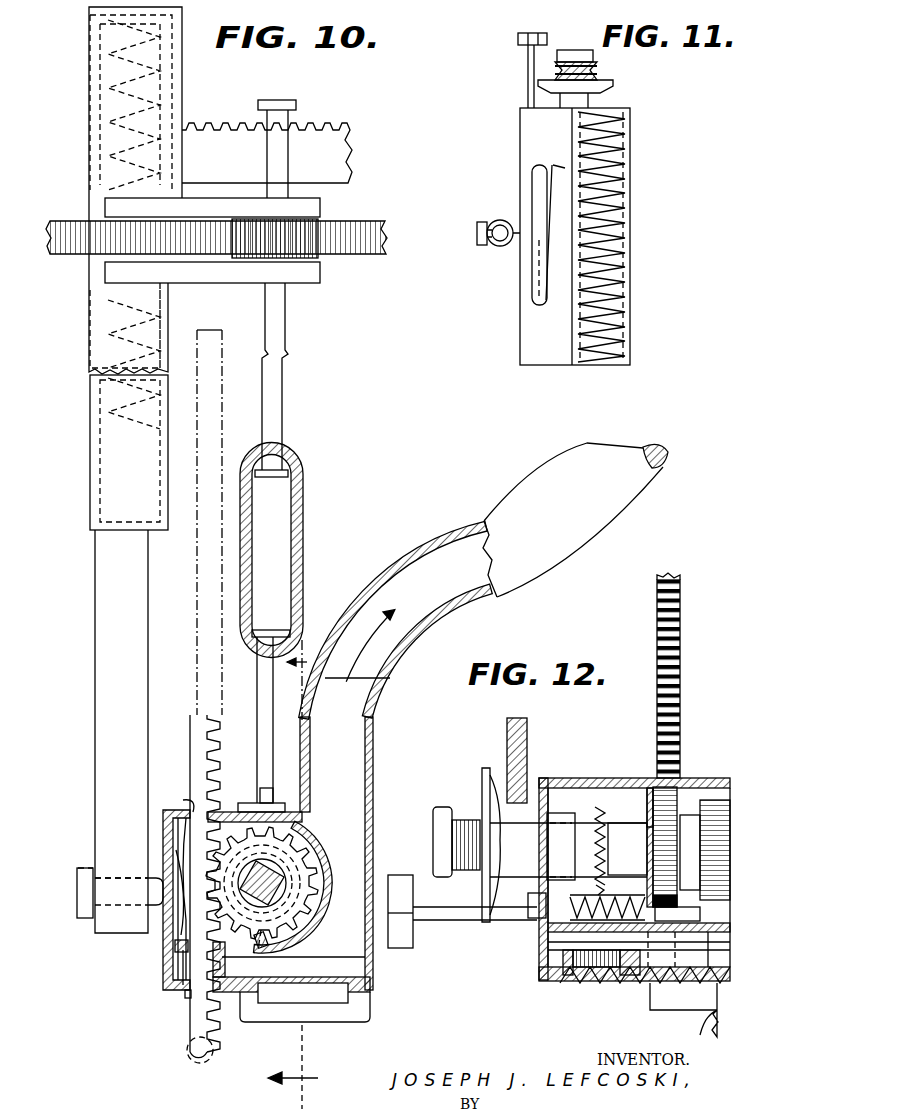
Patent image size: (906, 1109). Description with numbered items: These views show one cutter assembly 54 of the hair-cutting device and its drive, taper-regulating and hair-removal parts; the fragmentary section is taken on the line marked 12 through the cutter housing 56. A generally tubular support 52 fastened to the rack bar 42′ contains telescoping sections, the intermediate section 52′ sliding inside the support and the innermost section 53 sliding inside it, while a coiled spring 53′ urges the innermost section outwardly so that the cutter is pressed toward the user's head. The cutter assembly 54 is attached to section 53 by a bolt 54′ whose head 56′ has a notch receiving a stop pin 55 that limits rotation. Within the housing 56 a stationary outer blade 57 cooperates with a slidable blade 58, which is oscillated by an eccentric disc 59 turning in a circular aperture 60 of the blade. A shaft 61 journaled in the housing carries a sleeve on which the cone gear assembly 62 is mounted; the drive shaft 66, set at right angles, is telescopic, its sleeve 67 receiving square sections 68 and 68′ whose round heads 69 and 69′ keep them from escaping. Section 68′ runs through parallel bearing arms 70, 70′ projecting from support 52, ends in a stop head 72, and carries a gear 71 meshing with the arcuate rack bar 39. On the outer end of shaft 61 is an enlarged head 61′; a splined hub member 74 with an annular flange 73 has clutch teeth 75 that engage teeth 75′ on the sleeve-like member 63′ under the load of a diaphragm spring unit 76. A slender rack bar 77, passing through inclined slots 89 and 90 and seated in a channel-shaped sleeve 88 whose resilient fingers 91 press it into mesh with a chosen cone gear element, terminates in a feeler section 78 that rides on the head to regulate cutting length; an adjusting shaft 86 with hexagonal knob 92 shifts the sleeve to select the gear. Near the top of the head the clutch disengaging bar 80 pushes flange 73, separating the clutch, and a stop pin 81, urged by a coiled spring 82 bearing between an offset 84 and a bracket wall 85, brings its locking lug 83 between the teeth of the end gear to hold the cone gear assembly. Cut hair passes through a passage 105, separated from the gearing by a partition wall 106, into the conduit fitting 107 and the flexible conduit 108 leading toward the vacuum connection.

In FIG. 10, the direction of movement arrow 12 is at (295, 874).
In FIG. 10, the arcuate rack bar 39 is at (382, 260).
In FIG. 10, the rack bar 42′ is at (328, 140).
In FIG. 10, the tubular support 52 is at (88, 138).
In FIG. 10, the intermediate tubular section 52′ is at (90, 450).
In FIG. 10, the innermost tubular section 53 is at (98, 666).
In FIG. 11, the innermost tubular section 53 is at (500, 220).
In FIG. 10, the coiled spring 53′ is at (100, 340).
In FIG. 10, the cutter assembly 54 is at (158, 990).
In FIG. 11, the cutter assembly 54 is at (482, 243).
In FIG. 12, the cutter assembly 54 is at (540, 985).
In FIG. 10, the bolt 54′ is at (108, 878).
In FIG. 10, the stop pin 55 is at (85, 868).
In FIG. 10, the cutter housing 56 is at (168, 930).
In FIG. 10, the head of bolt 56′ is at (84, 898).
In FIG. 12, the stationary outer blade 57 is at (683, 996).
In FIG. 12, the slidable blade 58 is at (640, 985).
In FIG. 12, the eccentrically mounted circular disc 59 is at (580, 985).
In FIG. 12, the circular aperture 60 is at (618, 985).
In FIG. 10, the shaft 61 is at (285, 878).
In FIG. 11, the enlarged head 61′ is at (573, 50).
In FIG. 12, the enlarged head 61′ is at (433, 836).
In FIG. 10, the cone gear assembly 62 is at (300, 866).
In FIG. 12, the cone gear assembly 62 is at (680, 893).
In FIG. 12, the sleeve-like member 63′ is at (642, 800).
In FIG. 10, the drive shaft 66 is at (270, 790).
In FIG. 10, the sleeve 67 is at (300, 538).
In FIG. 10, the shaft section 68 is at (257, 710).
In FIG. 10, the shaft section 68′ is at (280, 404).
In FIG. 10, the round head 69 is at (268, 628).
In FIG. 10, the round head 69′ is at (272, 480).
In FIG. 10, the bearing support arm 70 is at (316, 282).
In FIG. 10, the bearing support arm 70′ is at (320, 208).
In FIG. 10, the gear 71 is at (314, 246).
In FIG. 10, the enlarged stop head 72 is at (276, 104).
In FIG. 11, the annular flange 73 is at (613, 85).
In FIG. 12, the annular flange 73 is at (484, 775).
In FIG. 12, the sleeve-like hub member 74 is at (545, 810).
In FIG. 12, the clutch teeth 75 is at (603, 882).
In FIG. 12, the clutch teeth 75′ is at (608, 835).
In FIG. 11, the multiple diaphragm spring unit 76 is at (597, 68).
In FIG. 12, the multiple diaphragm spring unit 76 is at (464, 820).
In FIG. 10, the straight rack bar 77 is at (195, 753).
In FIG. 12, the straight rack bar 77 is at (680, 632).
In FIG. 10, the feeler section 78 is at (188, 1052).
In FIG. 11, the feeler section 78 is at (532, 250).
In FIG. 12, the feeler section 78 is at (705, 1020).
In FIG. 12, the clutch disengaging bar 80 is at (528, 735).
In FIG. 12, the stop pin 81 is at (530, 897).
In FIG. 12, the coiled spring 82 is at (607, 901).
In FIG. 12, the locking lug element 83 is at (680, 945).
In FIG. 12, the offset 84 is at (564, 885).
In FIG. 12, the transverse bracket wall 85 is at (640, 880).
In FIG. 10, the adjusting shaft 86 is at (183, 988).
In FIG. 12, the adjusting shaft 86 is at (452, 903).
In FIG. 10, the channel-shaped sleeve 88 is at (234, 820).
In FIG. 10, the inclined slot 89 is at (190, 998).
In FIG. 11, the inclined slot 89 is at (557, 165).
In FIG. 10, the inclined slot 90 is at (176, 800).
In FIG. 10, the resilient fingers 91 is at (184, 855).
In FIG. 11, the hexagonal adjusting knob 92 is at (520, 45).
In FIG. 12, the hexagonal adjusting knob 92 is at (413, 946).
In FIG. 10, the passage 105 is at (372, 990).
In FIG. 10, the partition wall 106 is at (322, 880).
In FIG. 10, the conduit fitting 107 is at (374, 772).
In FIG. 10, the flexible conduit 108 is at (358, 600).